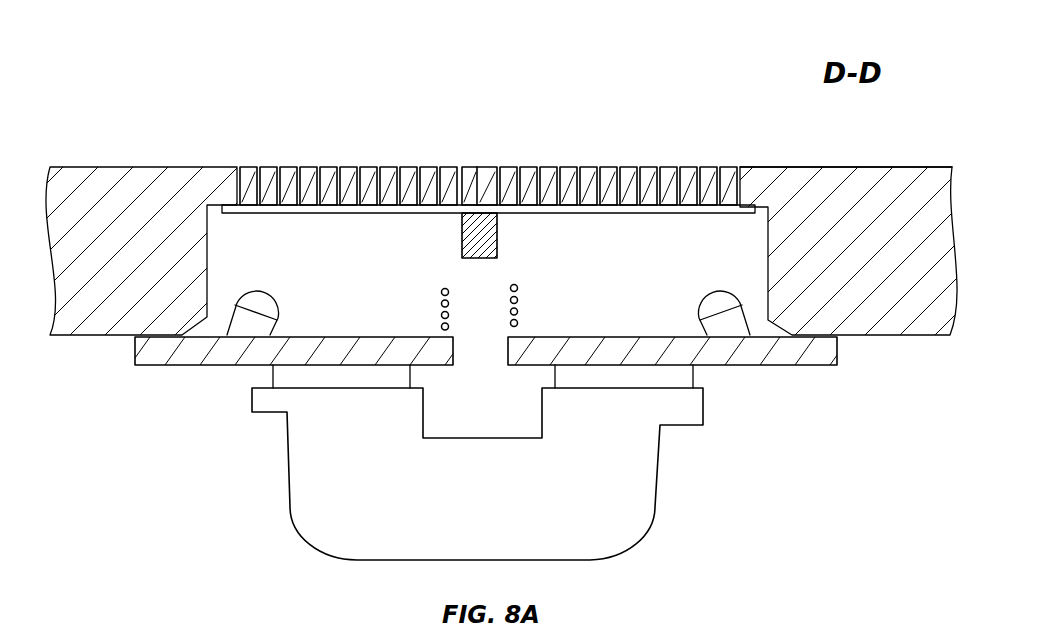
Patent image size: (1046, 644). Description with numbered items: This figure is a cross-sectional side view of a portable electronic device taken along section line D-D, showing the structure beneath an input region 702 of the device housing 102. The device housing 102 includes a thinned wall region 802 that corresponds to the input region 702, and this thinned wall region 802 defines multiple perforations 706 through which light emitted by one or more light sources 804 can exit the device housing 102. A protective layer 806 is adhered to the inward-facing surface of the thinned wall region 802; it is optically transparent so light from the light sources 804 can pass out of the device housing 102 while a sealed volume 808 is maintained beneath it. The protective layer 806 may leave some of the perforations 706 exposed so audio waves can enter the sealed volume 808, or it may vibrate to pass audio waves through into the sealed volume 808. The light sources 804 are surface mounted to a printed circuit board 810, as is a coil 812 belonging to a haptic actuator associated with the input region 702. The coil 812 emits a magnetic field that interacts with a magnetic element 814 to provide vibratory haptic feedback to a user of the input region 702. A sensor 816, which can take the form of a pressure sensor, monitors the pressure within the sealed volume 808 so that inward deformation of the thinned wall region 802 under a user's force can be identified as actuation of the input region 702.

The device housing 102 is at (143, 256).
The input region 702 is at (468, 199).
The perforations 706 is at (488, 148).
The thinned wall region 802 is at (833, 132).
The light sources 804 is at (488, 282).
The protective layer 806 is at (488, 240).
The sealed volume 808 is at (303, 258).
The printed circuit board 810 is at (490, 334).
The coil 812 is at (444, 308).
The magnetic element 814 is at (464, 235).
The sensor 816 is at (495, 516).